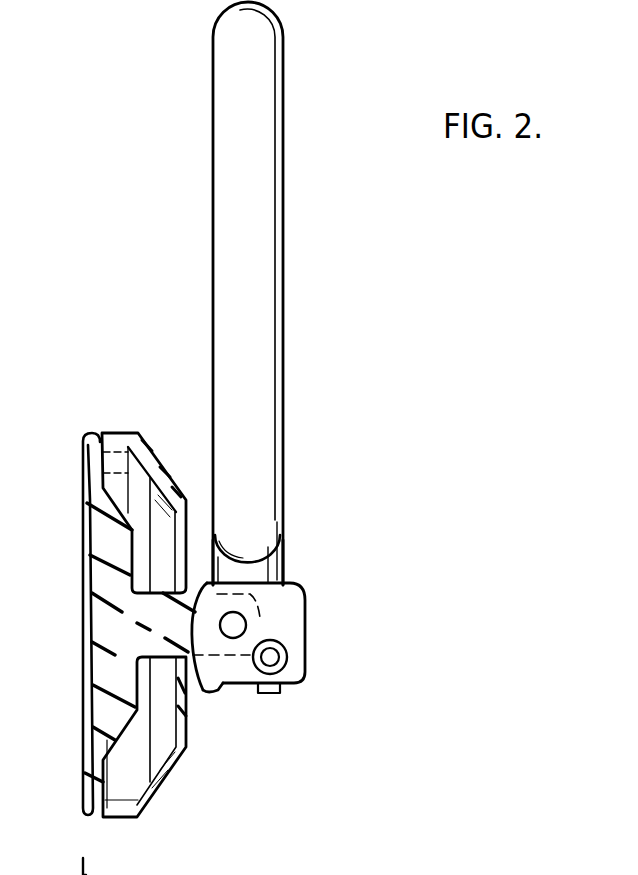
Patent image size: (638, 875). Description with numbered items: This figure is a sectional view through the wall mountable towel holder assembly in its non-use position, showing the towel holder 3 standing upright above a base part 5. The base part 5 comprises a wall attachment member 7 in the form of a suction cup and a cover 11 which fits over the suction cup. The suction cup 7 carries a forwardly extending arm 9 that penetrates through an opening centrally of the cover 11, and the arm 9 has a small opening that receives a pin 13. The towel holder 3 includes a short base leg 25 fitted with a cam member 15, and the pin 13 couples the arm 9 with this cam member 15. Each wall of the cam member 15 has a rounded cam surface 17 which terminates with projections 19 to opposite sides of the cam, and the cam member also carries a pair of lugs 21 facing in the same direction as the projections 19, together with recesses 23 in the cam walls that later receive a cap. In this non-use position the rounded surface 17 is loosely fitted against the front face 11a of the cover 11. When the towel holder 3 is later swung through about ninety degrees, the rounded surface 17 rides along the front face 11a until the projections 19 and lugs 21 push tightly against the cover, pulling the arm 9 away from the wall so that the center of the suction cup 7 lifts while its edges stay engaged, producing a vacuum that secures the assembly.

The towel holder 3 is at (273, 188).
The base part 5 is at (197, 602).
The wall attachment member 7 is at (102, 545).
The forwardly extending arm 9 is at (168, 618).
The cover 11 is at (118, 432).
The front face of cover 11a is at (188, 516).
The pin 13 is at (233, 625).
The cam member 15 is at (296, 618).
The rounded surface 17 is at (195, 607).
The projections 19 is at (205, 693).
The lugs 21 is at (267, 693).
The recesses 23 is at (272, 658).
The base leg 25 is at (284, 556).